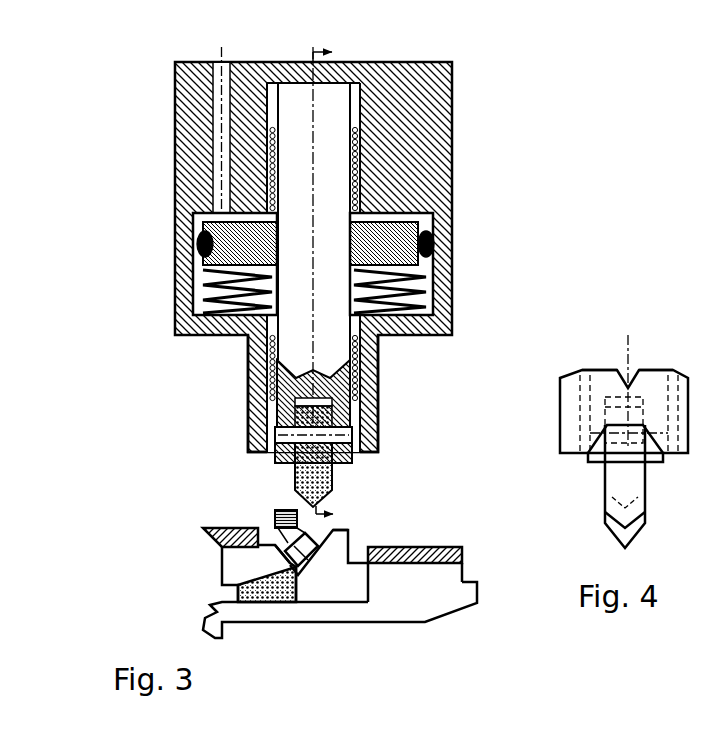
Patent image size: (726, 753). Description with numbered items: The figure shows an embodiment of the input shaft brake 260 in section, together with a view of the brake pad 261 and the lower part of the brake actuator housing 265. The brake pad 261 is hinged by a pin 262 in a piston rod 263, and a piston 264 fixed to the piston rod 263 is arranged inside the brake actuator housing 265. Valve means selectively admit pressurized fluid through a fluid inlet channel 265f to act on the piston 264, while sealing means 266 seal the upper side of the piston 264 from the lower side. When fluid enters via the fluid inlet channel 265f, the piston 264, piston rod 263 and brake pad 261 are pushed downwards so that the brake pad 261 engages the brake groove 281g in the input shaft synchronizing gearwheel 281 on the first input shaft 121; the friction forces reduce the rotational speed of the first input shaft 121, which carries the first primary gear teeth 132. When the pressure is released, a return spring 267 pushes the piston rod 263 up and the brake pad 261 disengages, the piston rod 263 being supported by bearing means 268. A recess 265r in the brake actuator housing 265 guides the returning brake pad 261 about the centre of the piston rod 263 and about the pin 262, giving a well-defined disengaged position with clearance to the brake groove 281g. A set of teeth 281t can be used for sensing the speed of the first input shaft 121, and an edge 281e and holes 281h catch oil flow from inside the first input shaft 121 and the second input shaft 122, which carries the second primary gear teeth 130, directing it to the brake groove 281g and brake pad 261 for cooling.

In FIG. 3, the input shaft brake 260 is at (163, 79).
In FIG. 3, the fluid inlet channel 265f is at (221, 120).
In FIG. 3, the bearing means 268 is at (364, 155).
In FIG. 3, the piston 264 is at (402, 227).
In FIG. 3, the sealing means 266 is at (432, 245).
In FIG. 3, the return spring 267 is at (421, 291).
In FIG. 3, the brake actuator housing 265 is at (382, 380).
In FIG. 4, the brake actuator housing 265 is at (586, 462).
In FIG. 3, the piston rod 263 is at (339, 391).
In FIG. 3, the pin 262 is at (339, 436).
In FIG. 3, the brake pad 261 is at (339, 484).
In FIG. 4, the brake pad 261 is at (601, 490).
In FIG. 3, the holes 281h is at (307, 531).
In FIG. 3, the edge 281e is at (287, 542).
In FIG. 3, the set of teeth 281t is at (351, 528).
In FIG. 3, the second primary gear teeth 130 is at (230, 550).
In FIG. 3, the second input shaft 122 is at (259, 562).
In FIG. 3, the input shaft synchronizing gearwheel 281 is at (324, 587).
In FIG. 3, the brake groove 281g is at (327, 542).
In FIG. 3, the first input shaft 121 is at (416, 607).
In FIG. 3, the first primary gear teeth 132 is at (437, 569).
In FIG. 4, the recess 265r is at (656, 426).